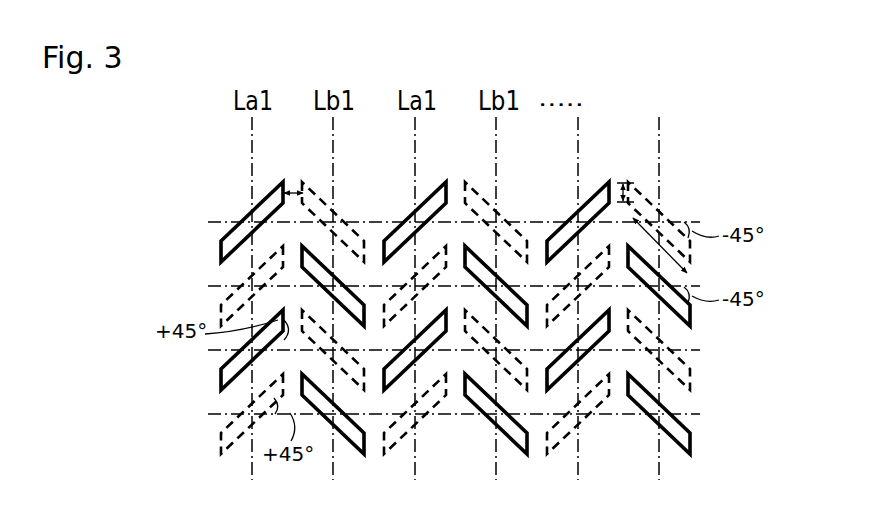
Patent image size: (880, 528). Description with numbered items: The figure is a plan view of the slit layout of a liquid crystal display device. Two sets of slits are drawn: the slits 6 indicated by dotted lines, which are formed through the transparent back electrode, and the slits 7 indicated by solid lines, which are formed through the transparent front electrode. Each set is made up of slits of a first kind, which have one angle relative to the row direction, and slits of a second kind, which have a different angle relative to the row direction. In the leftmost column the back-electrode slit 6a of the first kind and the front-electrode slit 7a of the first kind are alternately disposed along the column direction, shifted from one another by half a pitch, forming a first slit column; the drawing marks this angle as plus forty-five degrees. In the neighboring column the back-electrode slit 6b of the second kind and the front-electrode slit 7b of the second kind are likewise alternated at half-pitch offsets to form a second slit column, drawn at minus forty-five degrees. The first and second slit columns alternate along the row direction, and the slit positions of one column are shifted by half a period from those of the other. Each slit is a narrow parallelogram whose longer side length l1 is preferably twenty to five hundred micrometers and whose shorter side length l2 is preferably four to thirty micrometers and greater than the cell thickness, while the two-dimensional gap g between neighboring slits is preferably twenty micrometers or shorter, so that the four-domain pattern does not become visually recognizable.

The slits of the transparent front electrode 7 is at (249, 213).
The slits of the transparent back electrode 6 is at (248, 280).
The slit of the first kind of the transparent front electrode 7a is at (221, 380).
The slit of the first kind of the transparent back electrode 6a is at (221, 447).
The slit of the second kind of the transparent back electrode 6b is at (690, 257).
The slit of the second kind of the transparent front electrode 7b is at (690, 322).
The two-dimensional gap g is at (292, 192).
The longer side length l1 is at (662, 245).
The shorter side length l2 is at (620, 188).